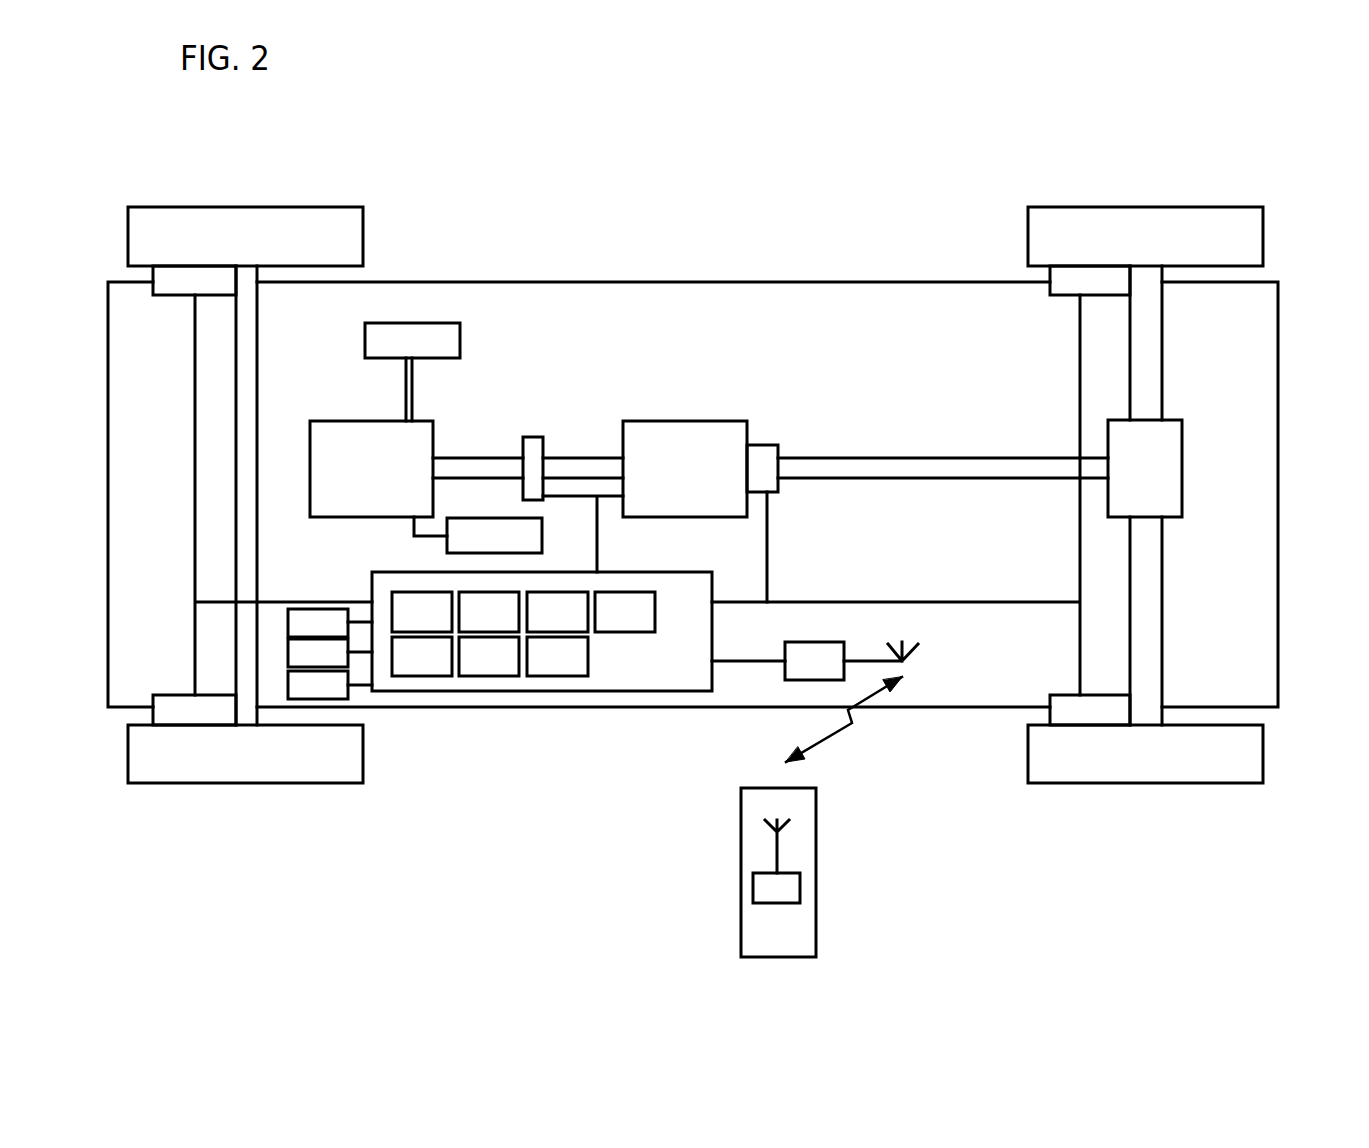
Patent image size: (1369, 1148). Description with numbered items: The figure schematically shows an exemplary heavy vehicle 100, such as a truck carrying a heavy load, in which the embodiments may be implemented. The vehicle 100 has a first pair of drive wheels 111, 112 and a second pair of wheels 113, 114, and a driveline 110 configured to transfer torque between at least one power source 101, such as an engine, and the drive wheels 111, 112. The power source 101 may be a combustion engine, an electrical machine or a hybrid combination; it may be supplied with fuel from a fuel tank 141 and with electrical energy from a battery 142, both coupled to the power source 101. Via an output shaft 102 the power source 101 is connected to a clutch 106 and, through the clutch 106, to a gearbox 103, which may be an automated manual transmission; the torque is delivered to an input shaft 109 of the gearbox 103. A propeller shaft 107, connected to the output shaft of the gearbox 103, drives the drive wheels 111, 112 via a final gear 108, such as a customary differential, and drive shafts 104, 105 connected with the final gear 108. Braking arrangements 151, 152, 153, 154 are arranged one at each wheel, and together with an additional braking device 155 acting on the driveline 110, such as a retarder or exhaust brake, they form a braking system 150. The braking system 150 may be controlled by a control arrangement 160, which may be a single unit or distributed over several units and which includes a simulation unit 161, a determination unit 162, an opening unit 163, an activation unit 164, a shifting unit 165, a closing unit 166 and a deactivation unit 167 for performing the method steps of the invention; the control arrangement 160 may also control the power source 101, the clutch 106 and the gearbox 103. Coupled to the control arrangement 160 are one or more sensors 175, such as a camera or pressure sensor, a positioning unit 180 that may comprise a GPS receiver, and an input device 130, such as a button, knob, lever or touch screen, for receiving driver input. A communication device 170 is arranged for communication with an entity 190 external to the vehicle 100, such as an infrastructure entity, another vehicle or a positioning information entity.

The heavy vehicle 100 is at (606, 104).
The power source 101 is at (342, 438).
The output shaft 102 is at (458, 466).
The gearbox 103 is at (687, 430).
The drive shaft 104 is at (1150, 338).
The drive shaft 105 is at (1155, 626).
The clutch 106 is at (528, 442).
The propeller shaft 107 is at (1008, 468).
The final gear 108 is at (1177, 460).
The input shaft 109 is at (570, 464).
The driveline 110 is at (648, 397).
The drive wheel 111 is at (1258, 755).
The drive wheel 112 is at (1258, 230).
The wheel 113 is at (350, 230).
The wheel 114 is at (355, 757).
The input device 130 is at (330, 685).
The fuel tank 141 is at (412, 372).
The battery 142 is at (478, 535).
The braking system 150 is at (824, 590).
The braking arrangement 151 is at (1064, 706).
The braking arrangement 152 is at (1076, 285).
The braking arrangement 153 is at (185, 282).
The braking arrangement 154 is at (164, 704).
The additional braking device 155 is at (760, 452).
The control arrangement 160 is at (542, 631).
The simulation unit 161 is at (422, 612).
The determination unit 162 is at (489, 612).
The opening unit 163 is at (557, 612).
The activation unit 164 is at (625, 612).
The shifting unit 165 is at (422, 656).
The closing unit 166 is at (489, 656).
The deactivation unit 167 is at (557, 656).
The communication device 170 is at (815, 702).
The sensor 175 is at (330, 623).
The positioning unit 180 is at (330, 653).
The external entity 190 is at (798, 942).